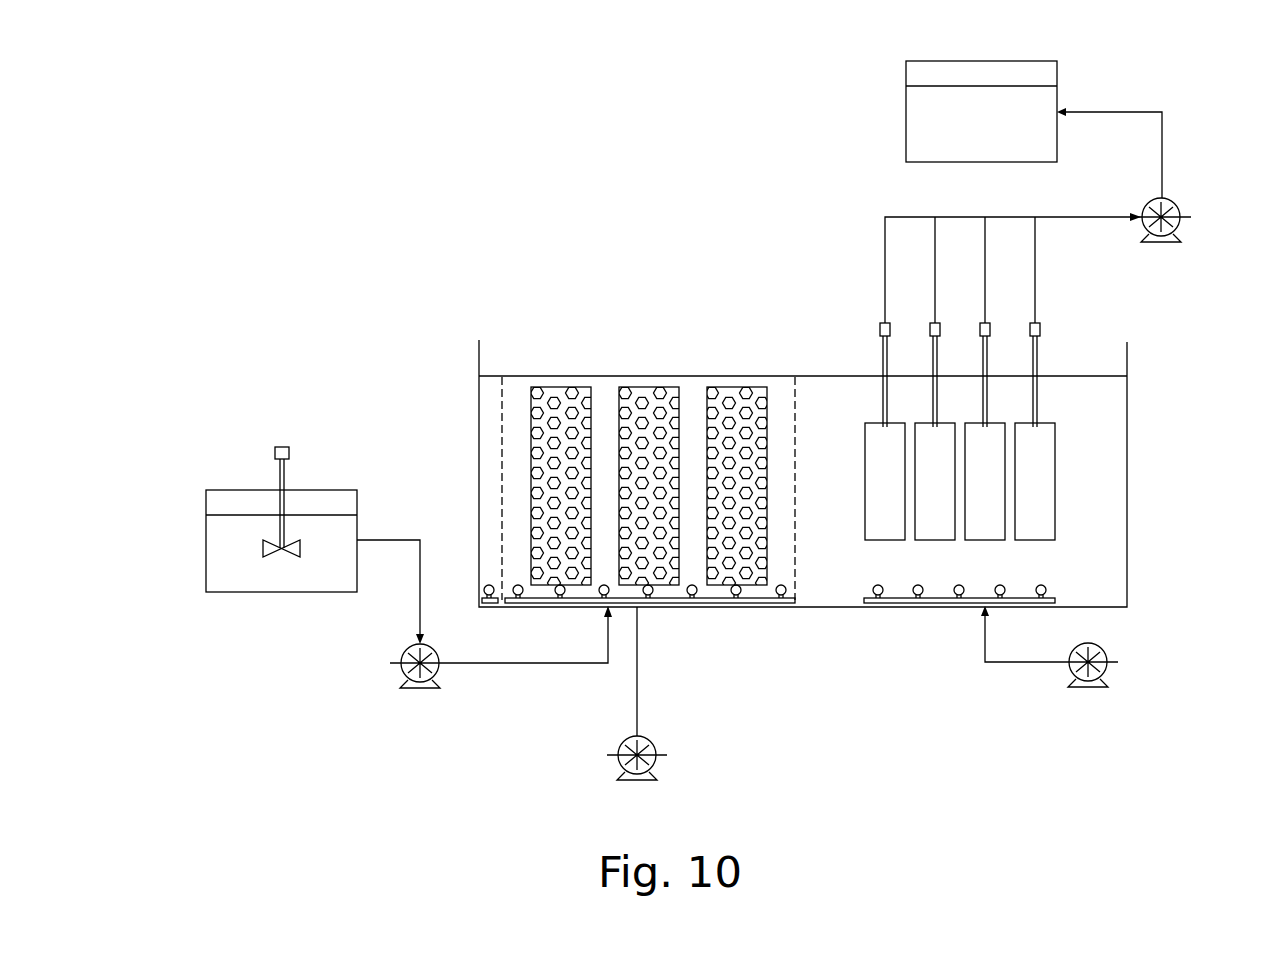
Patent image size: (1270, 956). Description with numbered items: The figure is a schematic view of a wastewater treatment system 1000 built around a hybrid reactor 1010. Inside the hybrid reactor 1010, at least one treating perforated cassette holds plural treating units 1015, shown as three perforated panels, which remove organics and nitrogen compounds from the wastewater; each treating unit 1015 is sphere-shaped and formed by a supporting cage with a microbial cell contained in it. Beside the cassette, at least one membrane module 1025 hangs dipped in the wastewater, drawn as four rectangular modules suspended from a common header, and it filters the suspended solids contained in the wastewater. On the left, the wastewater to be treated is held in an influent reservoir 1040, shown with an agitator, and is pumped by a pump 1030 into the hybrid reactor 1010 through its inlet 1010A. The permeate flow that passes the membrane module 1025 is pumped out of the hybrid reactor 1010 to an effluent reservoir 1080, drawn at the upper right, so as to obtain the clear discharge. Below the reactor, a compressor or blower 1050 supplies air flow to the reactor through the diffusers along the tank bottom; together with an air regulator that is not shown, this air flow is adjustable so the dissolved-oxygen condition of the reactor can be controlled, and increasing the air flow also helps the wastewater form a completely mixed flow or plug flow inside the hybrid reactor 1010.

The wastewater treatment system 1000 is at (228, 212).
The hybrid reactor 1010 is at (1127, 518).
The inlet 1010A is at (531, 635).
The treating units 1015 is at (572, 392).
The membrane module 1025 is at (1039, 488).
The pump 1030 is at (408, 647).
The influent reservoir 1040 is at (212, 512).
The compressor or blower 1050 is at (620, 742).
The effluent reservoir 1080 is at (1032, 65).